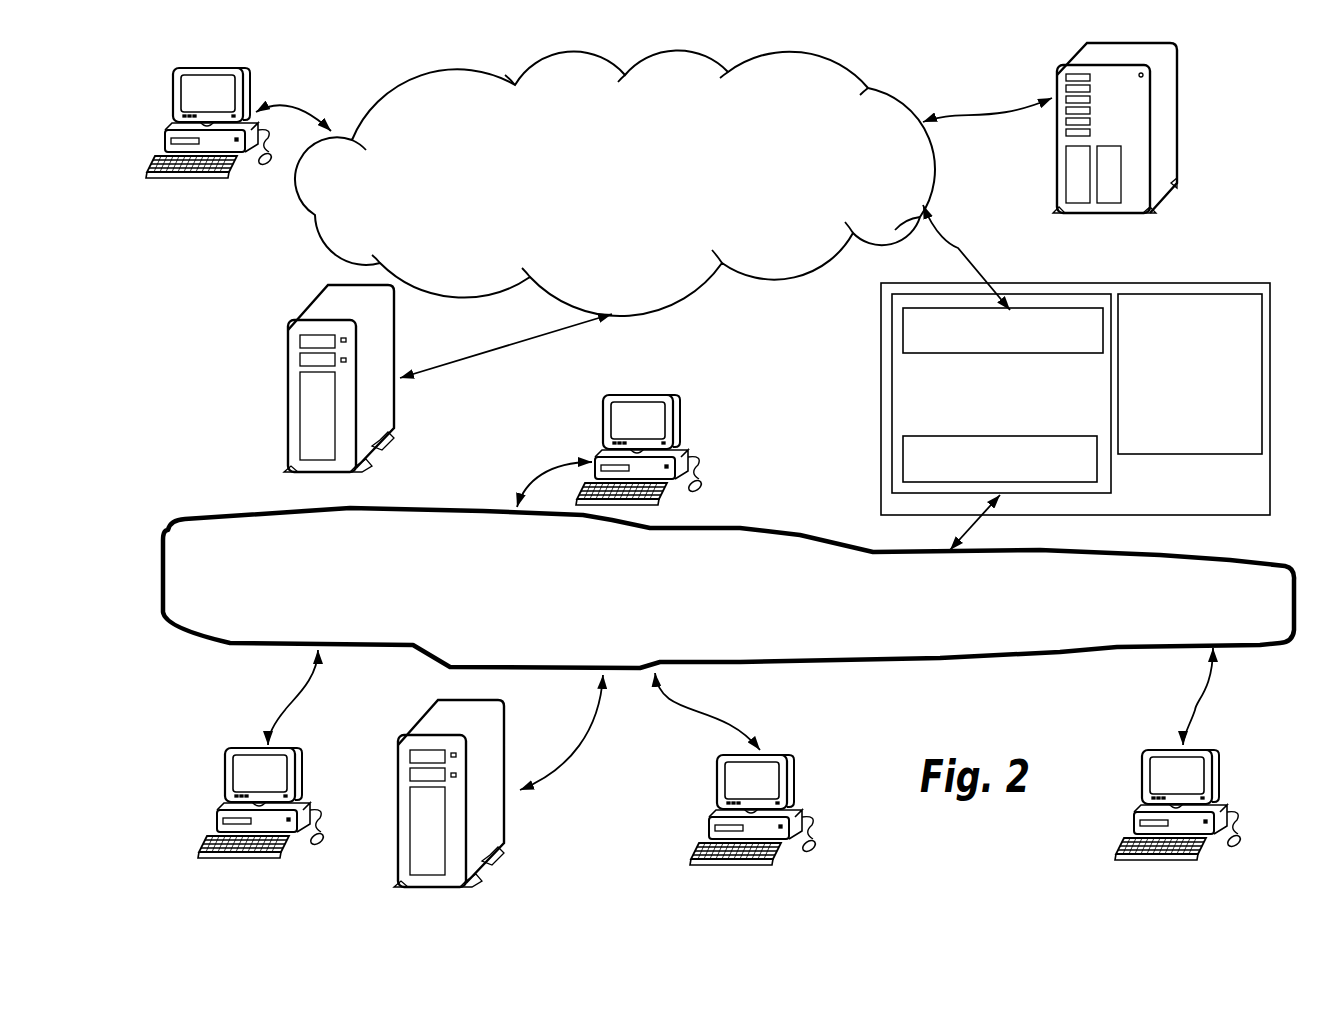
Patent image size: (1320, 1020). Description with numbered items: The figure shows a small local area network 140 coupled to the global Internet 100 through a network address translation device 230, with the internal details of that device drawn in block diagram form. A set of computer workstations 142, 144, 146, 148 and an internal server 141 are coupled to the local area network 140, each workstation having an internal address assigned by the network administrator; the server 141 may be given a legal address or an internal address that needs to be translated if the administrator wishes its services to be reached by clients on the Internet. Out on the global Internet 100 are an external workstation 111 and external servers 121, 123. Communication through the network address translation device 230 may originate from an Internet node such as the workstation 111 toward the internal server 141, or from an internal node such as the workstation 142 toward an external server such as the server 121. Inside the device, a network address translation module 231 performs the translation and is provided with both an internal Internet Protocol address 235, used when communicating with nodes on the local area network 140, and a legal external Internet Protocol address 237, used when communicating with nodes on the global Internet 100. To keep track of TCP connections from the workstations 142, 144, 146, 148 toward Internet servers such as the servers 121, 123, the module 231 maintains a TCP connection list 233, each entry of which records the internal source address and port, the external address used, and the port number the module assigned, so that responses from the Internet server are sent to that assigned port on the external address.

The global Internet 100 is at (615, 183).
The workstation 111 is at (209, 123).
The server 123 is at (1115, 128).
The server 121 is at (339, 378).
The network address translation device 230 is at (1075, 399).
The network address translation module 231 is at (1001, 393).
The external Internet Protocol address 237 is at (1003, 330).
The internal Internet Protocol address 235 is at (1000, 459).
The TCP connection list 233 is at (1190, 374).
The local area network 140 is at (167, 590).
The workstation 144 is at (639, 450).
The workstation 142 is at (261, 803).
The server 141 is at (449, 793).
The workstation 146 is at (753, 810).
The workstation 148 is at (1178, 805).